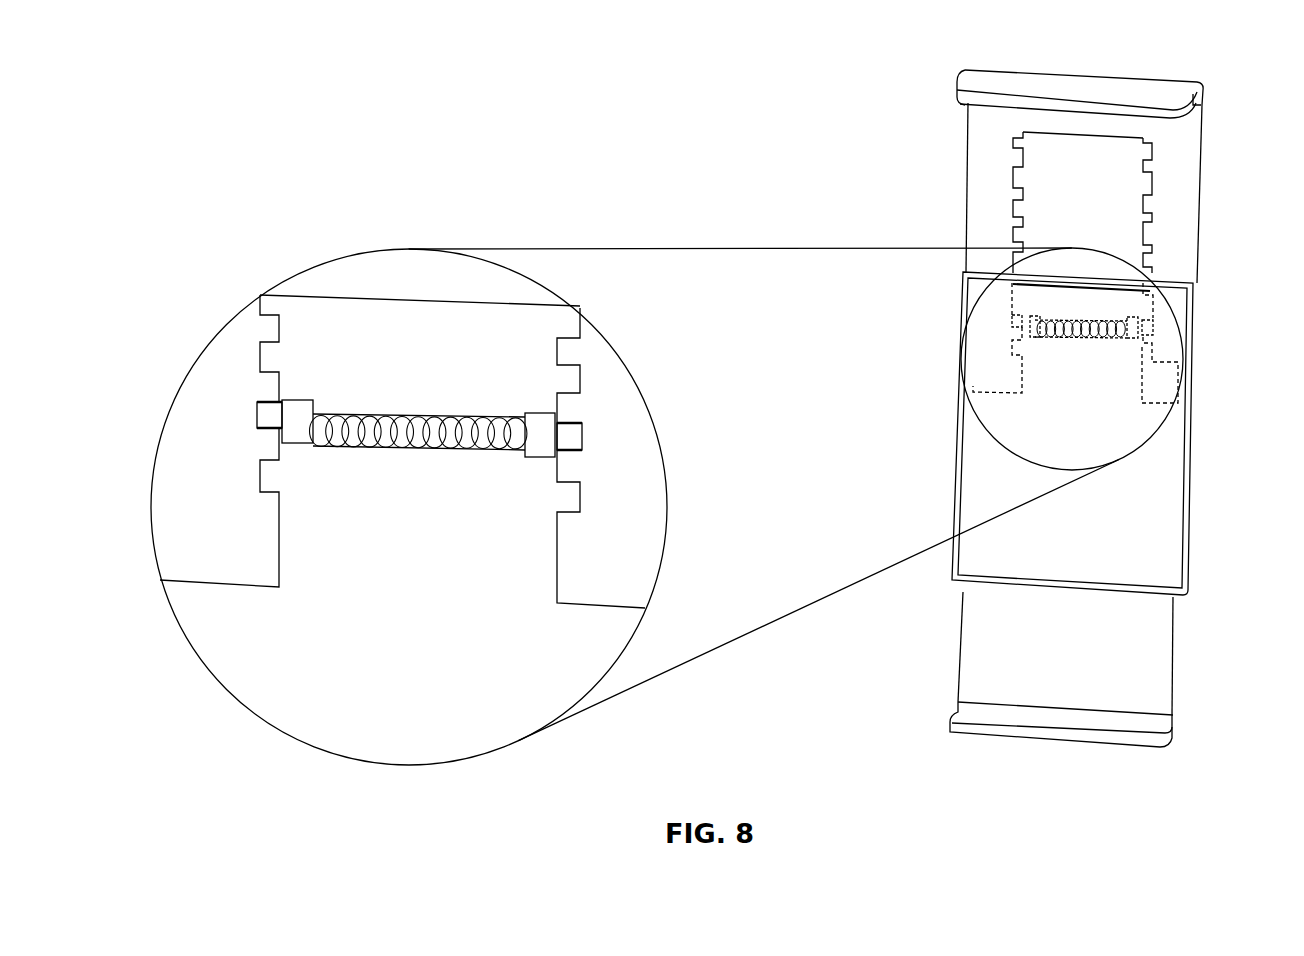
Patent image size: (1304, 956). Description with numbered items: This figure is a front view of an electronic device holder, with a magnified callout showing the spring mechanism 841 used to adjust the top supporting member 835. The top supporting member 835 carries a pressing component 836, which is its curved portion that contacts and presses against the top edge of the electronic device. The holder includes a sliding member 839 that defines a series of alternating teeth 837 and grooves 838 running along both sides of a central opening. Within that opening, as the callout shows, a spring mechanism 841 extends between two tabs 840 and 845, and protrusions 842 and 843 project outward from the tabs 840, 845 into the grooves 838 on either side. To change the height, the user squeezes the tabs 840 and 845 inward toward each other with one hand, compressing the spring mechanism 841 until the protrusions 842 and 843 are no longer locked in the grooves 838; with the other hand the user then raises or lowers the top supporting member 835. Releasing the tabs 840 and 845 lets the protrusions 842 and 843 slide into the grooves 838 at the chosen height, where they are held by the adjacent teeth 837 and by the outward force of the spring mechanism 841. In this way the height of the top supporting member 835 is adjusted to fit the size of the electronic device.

The top supporting member 835 is at (1146, 90).
The pressing component 836 is at (960, 103).
The teeth 837 is at (278, 330).
The grooves 838 is at (262, 298).
The sliding member 839 is at (1187, 200).
The tab 840 is at (298, 442).
The spring mechanism 841 is at (444, 452).
The protrusion 842 is at (268, 411).
The protrusion 843 is at (576, 438).
The tab 845 is at (538, 420).